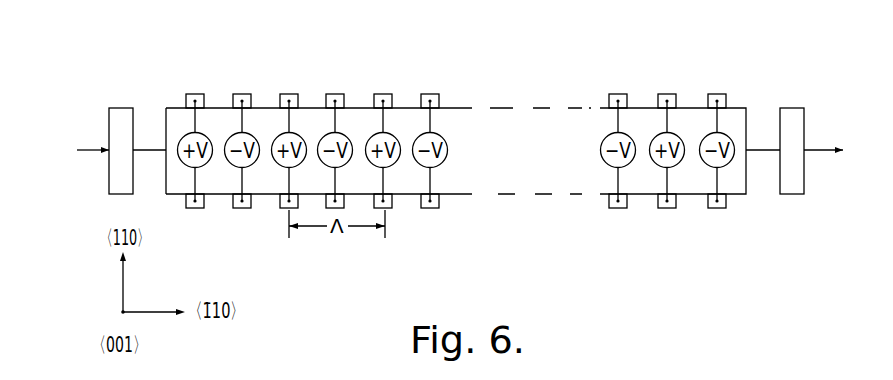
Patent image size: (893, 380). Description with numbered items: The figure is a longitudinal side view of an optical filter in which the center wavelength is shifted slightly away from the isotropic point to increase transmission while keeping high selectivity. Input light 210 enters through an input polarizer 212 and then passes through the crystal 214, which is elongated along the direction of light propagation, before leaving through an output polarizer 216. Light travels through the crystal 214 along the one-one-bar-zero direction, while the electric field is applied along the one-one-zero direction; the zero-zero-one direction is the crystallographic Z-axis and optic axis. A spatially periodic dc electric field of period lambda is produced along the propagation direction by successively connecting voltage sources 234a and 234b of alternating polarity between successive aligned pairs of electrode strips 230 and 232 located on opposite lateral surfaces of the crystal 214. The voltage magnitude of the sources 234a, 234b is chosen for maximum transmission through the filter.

The input light 210 is at (100, 155).
The input polarizer 212 is at (120, 108).
The crystal 214 is at (520, 198).
The output polarizer 216 is at (792, 112).
The electrode strips 230 is at (427, 93).
The electrode strips 232 is at (237, 208).
The voltage source 234a is at (187, 137).
The voltage source 234b is at (248, 140).